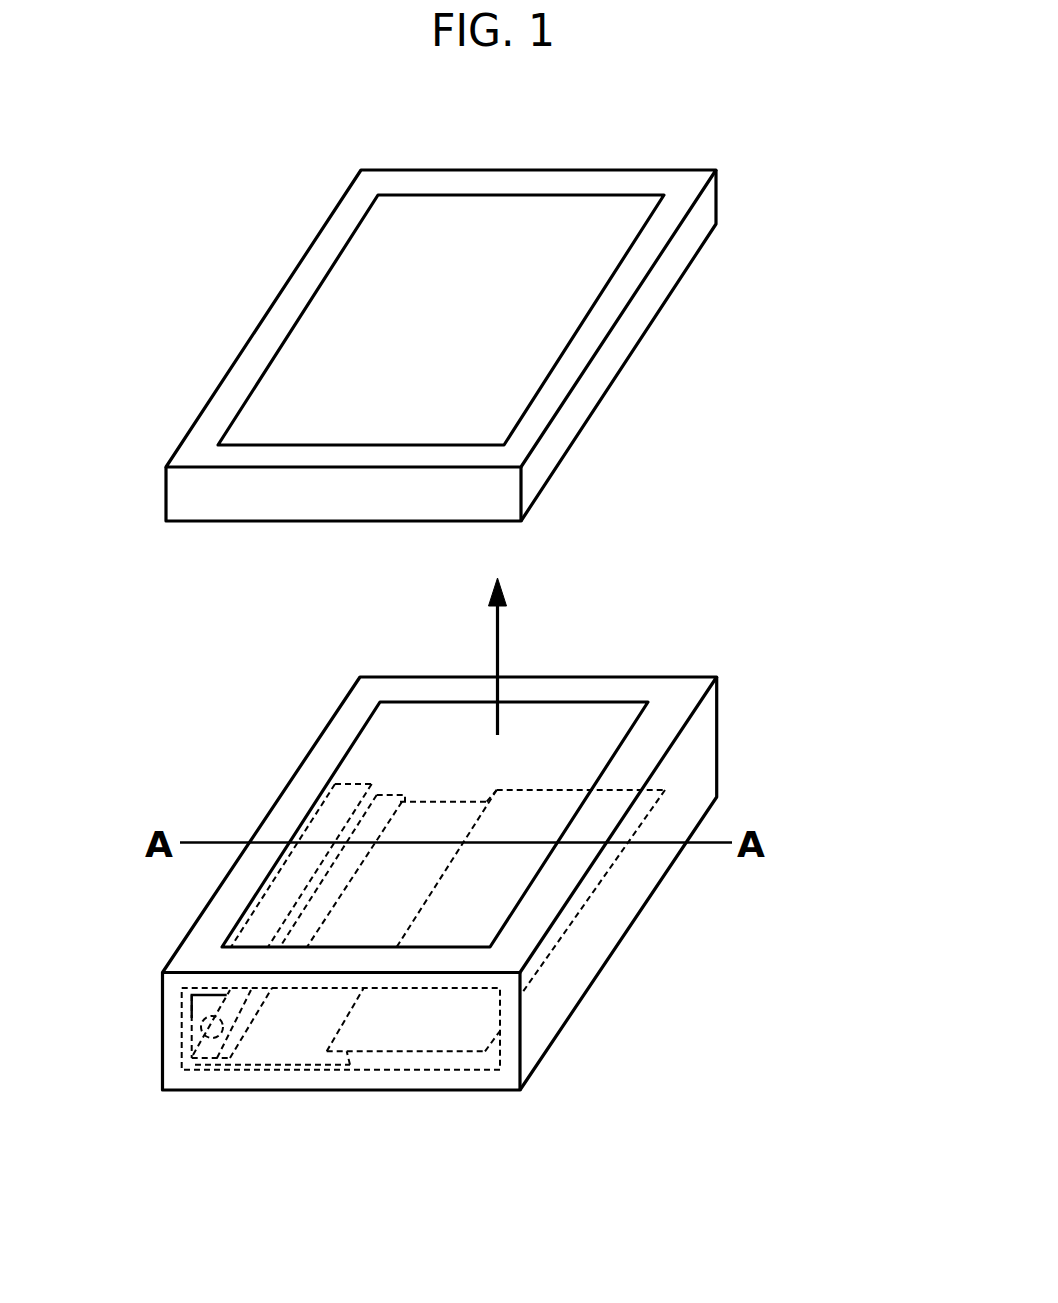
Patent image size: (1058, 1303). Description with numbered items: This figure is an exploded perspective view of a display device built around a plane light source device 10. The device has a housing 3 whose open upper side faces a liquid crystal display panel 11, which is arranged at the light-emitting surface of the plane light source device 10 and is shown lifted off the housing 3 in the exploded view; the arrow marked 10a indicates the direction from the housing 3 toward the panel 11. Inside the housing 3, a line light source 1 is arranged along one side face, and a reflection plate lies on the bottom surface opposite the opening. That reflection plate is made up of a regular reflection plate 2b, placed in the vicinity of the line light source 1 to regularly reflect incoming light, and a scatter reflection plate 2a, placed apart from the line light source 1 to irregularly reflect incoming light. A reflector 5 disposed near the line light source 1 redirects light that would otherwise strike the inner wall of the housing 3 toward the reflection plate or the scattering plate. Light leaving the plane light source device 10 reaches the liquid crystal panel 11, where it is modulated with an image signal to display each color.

The line light source 1 is at (212, 1030).
The scatter reflection plate 2a is at (417, 1053).
The regular reflection plate 2b is at (283, 1063).
The housing 3 is at (568, 977).
The reflector 5 is at (192, 1018).
The plane light source device 10 is at (826, 688).
The opening direction 10a is at (536, 656).
The liquid crystal display panel 11 is at (511, 184).